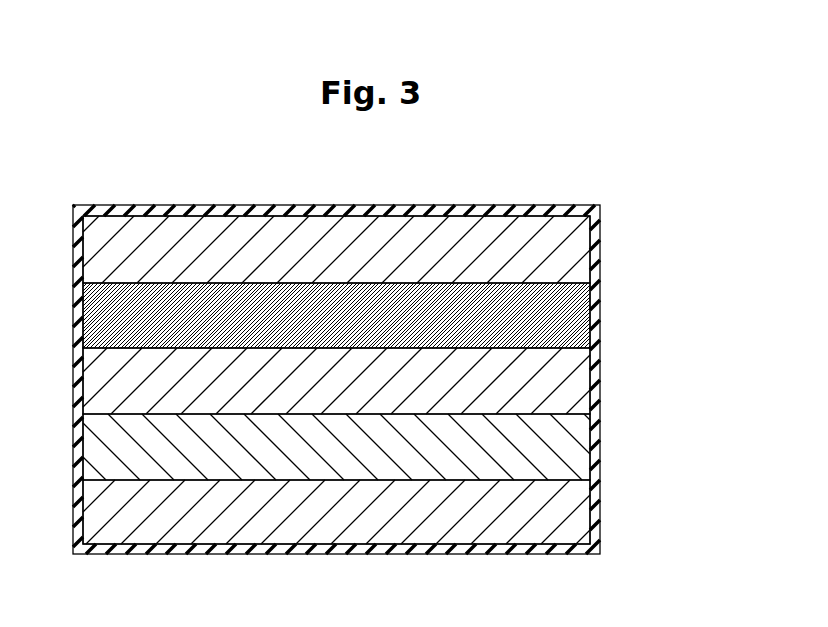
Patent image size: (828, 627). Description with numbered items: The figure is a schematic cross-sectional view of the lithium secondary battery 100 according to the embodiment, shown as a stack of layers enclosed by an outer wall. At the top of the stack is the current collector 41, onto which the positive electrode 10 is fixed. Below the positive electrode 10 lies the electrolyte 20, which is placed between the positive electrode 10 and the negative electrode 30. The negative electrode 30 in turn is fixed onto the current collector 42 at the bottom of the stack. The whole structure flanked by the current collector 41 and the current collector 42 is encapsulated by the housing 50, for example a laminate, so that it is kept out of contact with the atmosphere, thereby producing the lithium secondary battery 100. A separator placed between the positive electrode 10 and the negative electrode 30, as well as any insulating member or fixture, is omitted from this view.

The lithium secondary battery 100 is at (458, 190).
The housing 50 is at (338, 207).
The current collector 41 is at (583, 257).
The positive electrode 10 is at (585, 321).
The electrolyte 20 is at (583, 388).
The negative electrode 30 is at (585, 451).
The current collector 42 is at (583, 527).